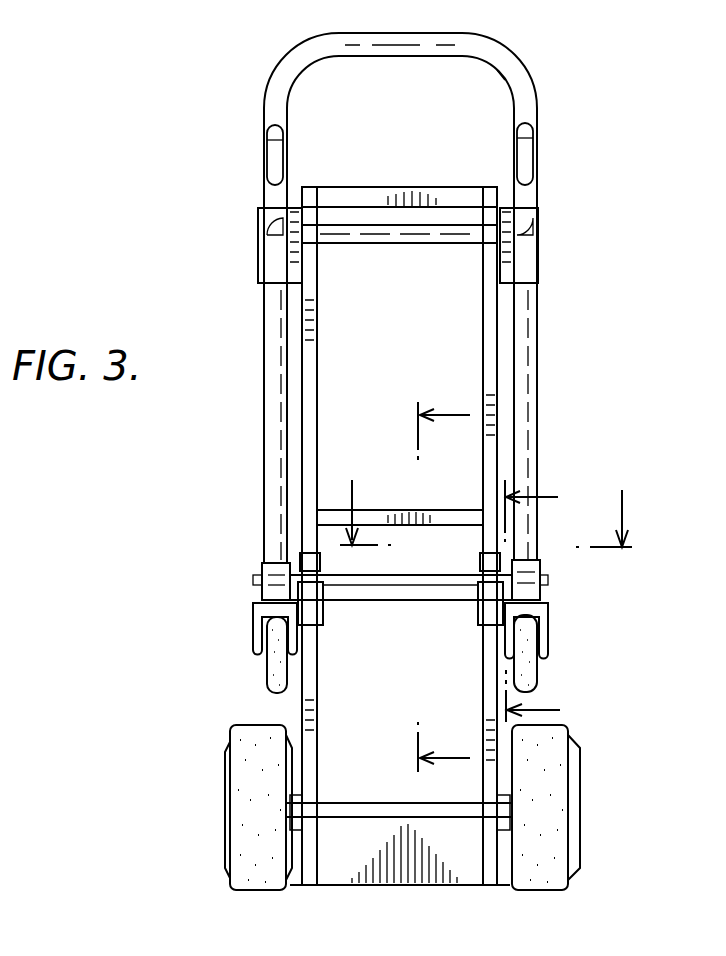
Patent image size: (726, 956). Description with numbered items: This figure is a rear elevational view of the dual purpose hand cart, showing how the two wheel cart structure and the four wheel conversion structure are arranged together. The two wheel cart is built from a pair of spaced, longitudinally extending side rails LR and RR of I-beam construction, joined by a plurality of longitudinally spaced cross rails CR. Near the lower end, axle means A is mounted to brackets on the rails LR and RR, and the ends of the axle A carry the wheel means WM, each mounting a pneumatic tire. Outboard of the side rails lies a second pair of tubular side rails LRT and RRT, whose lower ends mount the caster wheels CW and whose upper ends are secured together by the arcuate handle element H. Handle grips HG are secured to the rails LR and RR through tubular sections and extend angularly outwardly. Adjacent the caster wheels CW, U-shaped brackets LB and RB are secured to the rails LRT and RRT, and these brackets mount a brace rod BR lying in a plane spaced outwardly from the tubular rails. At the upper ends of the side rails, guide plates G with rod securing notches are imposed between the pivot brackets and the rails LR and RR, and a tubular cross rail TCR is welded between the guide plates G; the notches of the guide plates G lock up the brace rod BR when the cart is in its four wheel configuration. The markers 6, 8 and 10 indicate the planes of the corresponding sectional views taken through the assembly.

The arcuate handle element H is at (420, 38).
The handle grips HG is at (266, 135).
The cross rails CR is at (393, 187).
The tubular cross rail TCR is at (348, 232).
The guide plate G is at (258, 262).
The left side rail LR is at (302, 322).
The right side rail RR is at (500, 313).
The left tubular side rail LRT is at (265, 442).
The right tubular side rail RRT is at (537, 347).
The left bracket LB is at (262, 568).
The right bracket RB is at (542, 567).
The caster wheels CW is at (253, 637).
The brace rod BR is at (357, 586).
The axle means A is at (373, 802).
The wheel means WM is at (228, 800).
The section line 6- 6 is at (549, 601).
The section line 8- 8 is at (490, 500).
The section line 10- 10 is at (444, 587).